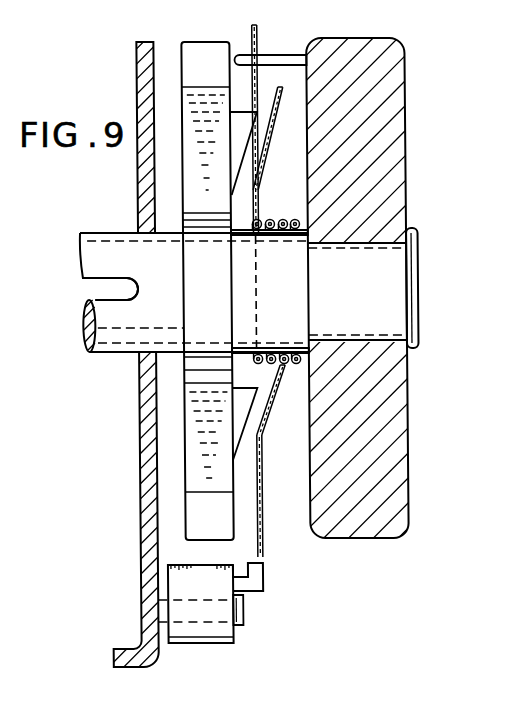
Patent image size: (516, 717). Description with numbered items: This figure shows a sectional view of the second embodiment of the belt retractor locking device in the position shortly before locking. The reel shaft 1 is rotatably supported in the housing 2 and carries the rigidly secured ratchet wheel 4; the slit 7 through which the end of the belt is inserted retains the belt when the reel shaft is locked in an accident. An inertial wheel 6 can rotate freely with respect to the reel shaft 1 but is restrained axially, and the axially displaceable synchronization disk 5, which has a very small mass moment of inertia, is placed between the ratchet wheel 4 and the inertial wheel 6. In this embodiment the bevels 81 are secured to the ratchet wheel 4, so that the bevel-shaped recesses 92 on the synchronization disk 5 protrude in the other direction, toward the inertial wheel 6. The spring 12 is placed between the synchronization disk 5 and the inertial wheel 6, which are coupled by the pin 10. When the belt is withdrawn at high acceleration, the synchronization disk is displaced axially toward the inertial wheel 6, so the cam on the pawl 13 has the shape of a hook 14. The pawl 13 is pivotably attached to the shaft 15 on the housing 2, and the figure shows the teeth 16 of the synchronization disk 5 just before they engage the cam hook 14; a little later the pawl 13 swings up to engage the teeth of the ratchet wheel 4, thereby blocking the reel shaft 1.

The reel shaft 1 is at (100, 248).
The housing 2 is at (108, 654).
The ratchet wheel 4 is at (194, 353).
The synchronization disk 5 is at (257, 32).
The inertial wheel 6 is at (387, 188).
The slit 7 is at (123, 293).
The pin 10 is at (273, 56).
The spring 12 is at (267, 218).
The pawl 13 is at (211, 630).
The cam hook 14 is at (259, 571).
The shaft 15 is at (239, 616).
The teeth of synchronization disk 16 is at (256, 555).
The bevels 81 is at (241, 124).
The bevel-shaped recesses 92 is at (265, 116).